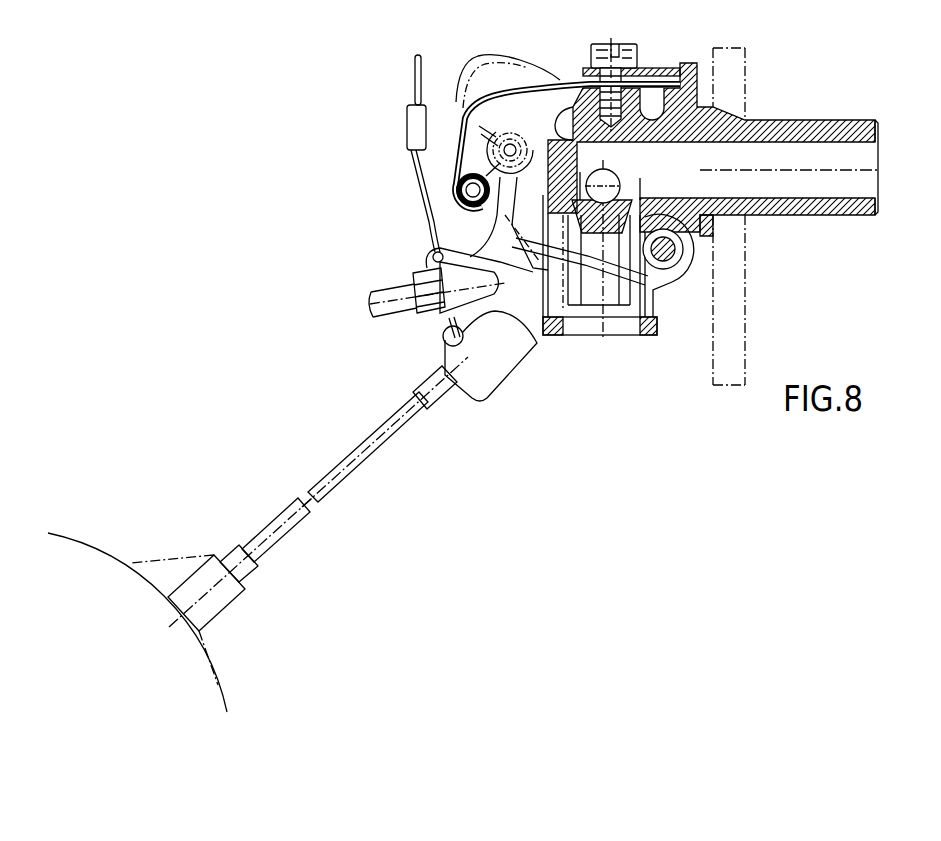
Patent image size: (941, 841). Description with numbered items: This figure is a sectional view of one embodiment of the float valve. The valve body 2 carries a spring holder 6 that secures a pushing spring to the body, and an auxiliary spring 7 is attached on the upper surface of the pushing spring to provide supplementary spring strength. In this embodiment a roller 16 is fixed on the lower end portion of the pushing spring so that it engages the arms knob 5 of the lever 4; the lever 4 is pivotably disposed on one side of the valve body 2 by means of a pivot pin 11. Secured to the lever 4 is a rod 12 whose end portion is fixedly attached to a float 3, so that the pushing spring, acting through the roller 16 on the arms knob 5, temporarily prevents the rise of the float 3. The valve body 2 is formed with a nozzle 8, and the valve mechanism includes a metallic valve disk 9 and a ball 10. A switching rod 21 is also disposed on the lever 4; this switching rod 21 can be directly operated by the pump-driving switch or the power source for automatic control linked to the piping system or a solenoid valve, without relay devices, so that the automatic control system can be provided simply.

The valve body 2 is at (714, 107).
The float 3 is at (70, 536).
The lever 4 is at (423, 232).
The arms knob 5 is at (543, 142).
The spring holder 6 is at (664, 68).
The auxiliary spring 7 is at (488, 90).
The nozzle 8 is at (604, 166).
The metallic valve disk 9 is at (695, 238).
The ball 10 is at (641, 186).
The pivot pin 11 is at (668, 260).
The rod 12 is at (350, 455).
The roller 16 is at (452, 192).
The switching rod 21 is at (410, 156).